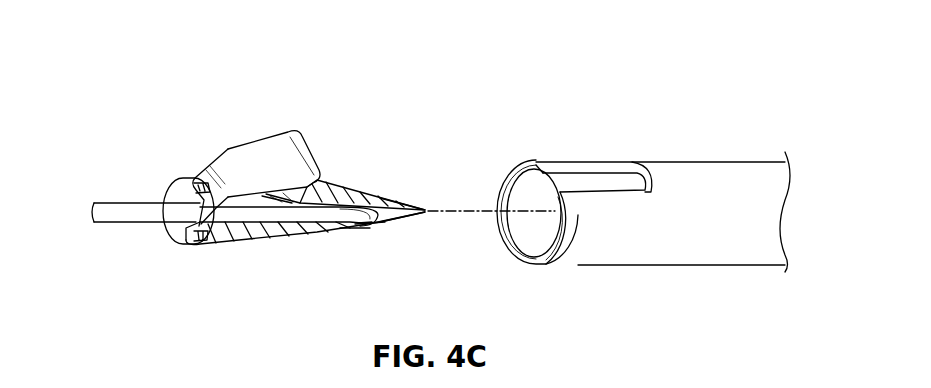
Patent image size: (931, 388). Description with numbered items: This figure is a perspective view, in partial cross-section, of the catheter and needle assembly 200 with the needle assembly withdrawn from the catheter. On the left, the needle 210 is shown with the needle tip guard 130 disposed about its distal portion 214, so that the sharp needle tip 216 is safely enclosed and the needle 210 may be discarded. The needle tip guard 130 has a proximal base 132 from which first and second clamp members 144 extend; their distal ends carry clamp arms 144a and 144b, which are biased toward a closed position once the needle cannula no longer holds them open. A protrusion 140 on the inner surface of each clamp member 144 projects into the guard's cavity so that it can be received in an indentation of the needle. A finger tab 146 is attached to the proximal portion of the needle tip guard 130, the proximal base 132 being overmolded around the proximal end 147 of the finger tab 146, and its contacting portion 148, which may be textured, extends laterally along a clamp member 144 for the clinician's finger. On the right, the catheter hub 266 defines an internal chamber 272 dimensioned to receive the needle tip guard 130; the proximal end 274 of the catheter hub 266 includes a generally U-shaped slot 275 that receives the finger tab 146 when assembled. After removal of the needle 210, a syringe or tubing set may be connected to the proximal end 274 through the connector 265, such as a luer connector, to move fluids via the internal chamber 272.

The catheter and needle assembly 200 is at (523, 62).
The needle 210 is at (111, 194).
The proximal base 132 is at (165, 195).
The needle tip guard 130 is at (337, 155).
The finger tab 146 is at (225, 148).
The contacting portion 148 is at (252, 170).
The clamp members 144 is at (332, 183).
The clamp arm 144a is at (400, 204).
The clamp arm 144b is at (400, 226).
The proximal end of finger tab 147 is at (219, 224).
The protrusion 140 is at (323, 222).
The needle tip 216 is at (373, 230).
The distal portion 214 is at (367, 230).
The internal chamber 272 is at (357, 233).
The catheter hub 266 is at (720, 122).
The proximal end 274 is at (562, 248).
The connector 265 is at (583, 223).
The slot 275 is at (607, 180).